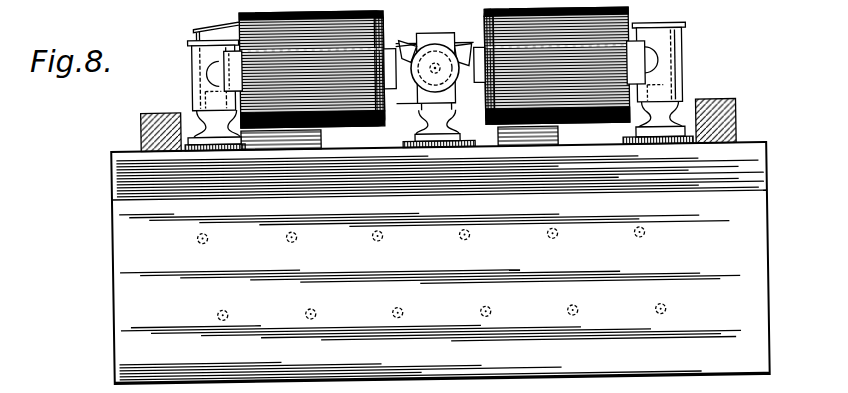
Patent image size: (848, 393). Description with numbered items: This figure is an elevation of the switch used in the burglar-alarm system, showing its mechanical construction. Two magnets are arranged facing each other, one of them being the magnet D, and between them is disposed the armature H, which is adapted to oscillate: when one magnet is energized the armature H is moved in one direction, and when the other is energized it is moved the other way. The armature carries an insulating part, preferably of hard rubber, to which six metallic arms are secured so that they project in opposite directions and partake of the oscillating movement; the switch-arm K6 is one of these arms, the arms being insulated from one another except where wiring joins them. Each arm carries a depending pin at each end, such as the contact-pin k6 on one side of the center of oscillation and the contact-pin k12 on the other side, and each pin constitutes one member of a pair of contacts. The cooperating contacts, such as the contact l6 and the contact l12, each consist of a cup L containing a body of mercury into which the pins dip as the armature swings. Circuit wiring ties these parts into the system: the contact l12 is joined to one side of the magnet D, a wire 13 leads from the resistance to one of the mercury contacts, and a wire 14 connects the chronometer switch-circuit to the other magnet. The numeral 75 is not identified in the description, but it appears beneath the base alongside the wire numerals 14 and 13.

The magnet D is at (307, 12).
The contact-pin k12 is at (198, 28).
The contact l12 is at (208, 104).
The cup L is at (197, 122).
The armature H is at (468, 50).
The switch-arm K6 is at (396, 44).
The contact-pin k6 is at (681, 76).
The contact l6 is at (682, 92).
The wire 14 is at (467, 389).
The base portion 75 is at (497, 388).
The wire 13 is at (648, 385).